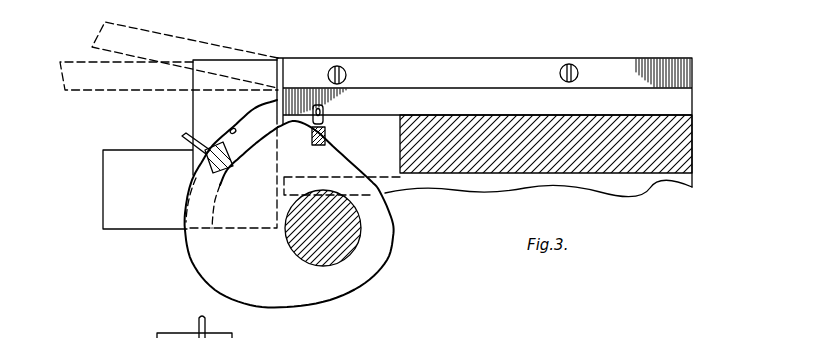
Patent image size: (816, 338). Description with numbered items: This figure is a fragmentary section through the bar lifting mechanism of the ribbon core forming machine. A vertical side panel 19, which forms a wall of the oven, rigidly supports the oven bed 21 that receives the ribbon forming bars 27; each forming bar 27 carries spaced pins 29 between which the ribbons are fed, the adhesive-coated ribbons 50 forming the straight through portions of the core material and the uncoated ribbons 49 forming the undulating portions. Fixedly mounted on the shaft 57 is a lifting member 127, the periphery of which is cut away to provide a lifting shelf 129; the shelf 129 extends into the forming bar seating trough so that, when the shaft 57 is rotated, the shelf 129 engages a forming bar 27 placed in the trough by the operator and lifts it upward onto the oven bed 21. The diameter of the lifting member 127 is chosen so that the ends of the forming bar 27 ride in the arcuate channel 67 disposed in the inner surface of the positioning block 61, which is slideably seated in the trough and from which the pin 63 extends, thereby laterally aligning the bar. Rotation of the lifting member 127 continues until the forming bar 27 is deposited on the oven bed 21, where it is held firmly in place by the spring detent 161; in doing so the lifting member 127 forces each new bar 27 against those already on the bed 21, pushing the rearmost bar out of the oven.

The vertical side panel 19 is at (680, 99).
The oven bed 21 is at (683, 144).
The ribbon forming bar 27 is at (196, 177).
The pin 29 is at (184, 139).
The ribbon (uncoated) 49 is at (70, 92).
The ribbon (adhesive-coated) 50 is at (99, 42).
The shaft 57 is at (352, 232).
The positioning block 61 is at (103, 179).
The pin 63 is at (210, 322).
The arcuate channel 67 is at (230, 130).
The lifting member 127 is at (370, 267).
The lifting shelf 129 is at (205, 156).
The spring detent 161 is at (323, 110).